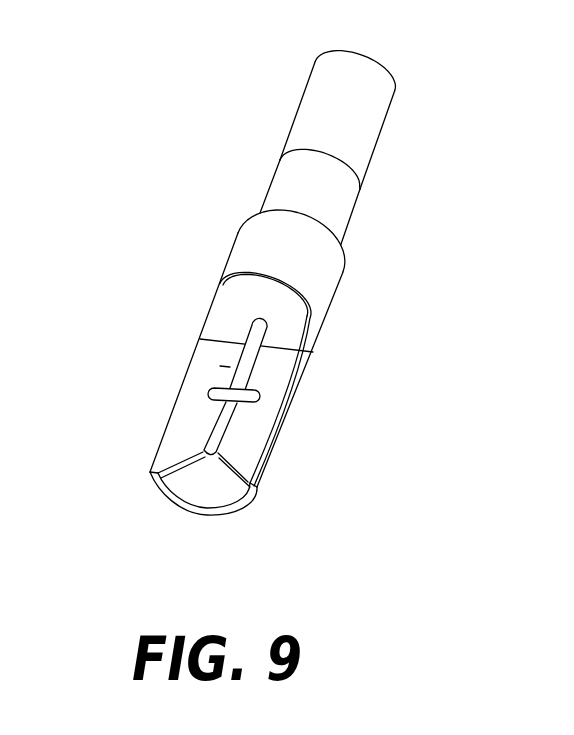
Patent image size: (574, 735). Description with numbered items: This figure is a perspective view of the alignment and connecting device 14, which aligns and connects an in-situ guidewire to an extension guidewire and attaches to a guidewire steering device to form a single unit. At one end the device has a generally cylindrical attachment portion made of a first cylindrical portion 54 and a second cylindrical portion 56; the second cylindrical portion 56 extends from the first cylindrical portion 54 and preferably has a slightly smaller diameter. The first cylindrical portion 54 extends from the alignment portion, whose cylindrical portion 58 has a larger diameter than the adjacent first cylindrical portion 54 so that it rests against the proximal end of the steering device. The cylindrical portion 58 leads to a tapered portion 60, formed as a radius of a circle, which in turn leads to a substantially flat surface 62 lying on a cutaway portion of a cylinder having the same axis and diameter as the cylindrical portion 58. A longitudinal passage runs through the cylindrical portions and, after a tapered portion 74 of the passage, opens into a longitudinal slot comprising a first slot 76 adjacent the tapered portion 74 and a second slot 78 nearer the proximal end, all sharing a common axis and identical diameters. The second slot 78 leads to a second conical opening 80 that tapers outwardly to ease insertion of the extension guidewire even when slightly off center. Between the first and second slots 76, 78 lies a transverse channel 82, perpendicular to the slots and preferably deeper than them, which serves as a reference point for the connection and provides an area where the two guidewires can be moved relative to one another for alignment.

The alignment and connecting device 14 is at (130, 244).
The second cylindrical portion 56 is at (372, 133).
The first cylindrical portion 54 is at (338, 209).
The cylindrical portion 58 is at (323, 272).
The tapered portion 60 is at (208, 313).
The substantially flat surface 62 is at (183, 423).
The tapered portion of the passage 74 is at (263, 327).
The first longitudinal slot 76 is at (249, 368).
The second longitudinal slot 78 is at (220, 428).
The second conical opening 80 is at (218, 488).
The transverse channel 82 is at (207, 390).